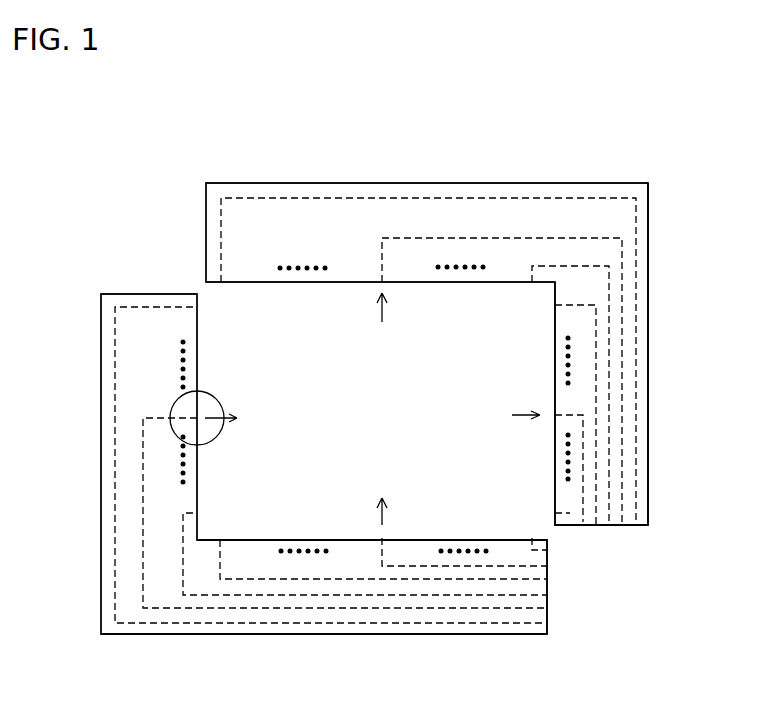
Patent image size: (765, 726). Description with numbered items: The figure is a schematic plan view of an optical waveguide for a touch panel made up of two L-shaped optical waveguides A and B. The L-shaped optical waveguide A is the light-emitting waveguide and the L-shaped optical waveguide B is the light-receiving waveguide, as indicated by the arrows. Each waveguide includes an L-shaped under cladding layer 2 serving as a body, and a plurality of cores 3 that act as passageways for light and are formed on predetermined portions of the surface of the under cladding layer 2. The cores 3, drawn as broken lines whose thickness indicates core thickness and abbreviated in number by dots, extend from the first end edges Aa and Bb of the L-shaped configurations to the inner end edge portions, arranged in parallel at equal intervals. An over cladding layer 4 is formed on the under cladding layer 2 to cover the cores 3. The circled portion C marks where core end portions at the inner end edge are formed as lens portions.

The under cladding layer 2 is at (482, 184).
The cores 3 is at (582, 265).
The over cladding layer 4 is at (648, 297).
The L-shaped optical waveguide A is at (143, 292).
The L-shaped optical waveguide B is at (205, 228).
The portion C is at (170, 408).
The first end edge Aa is at (548, 600).
The first end edge Bb is at (617, 525).